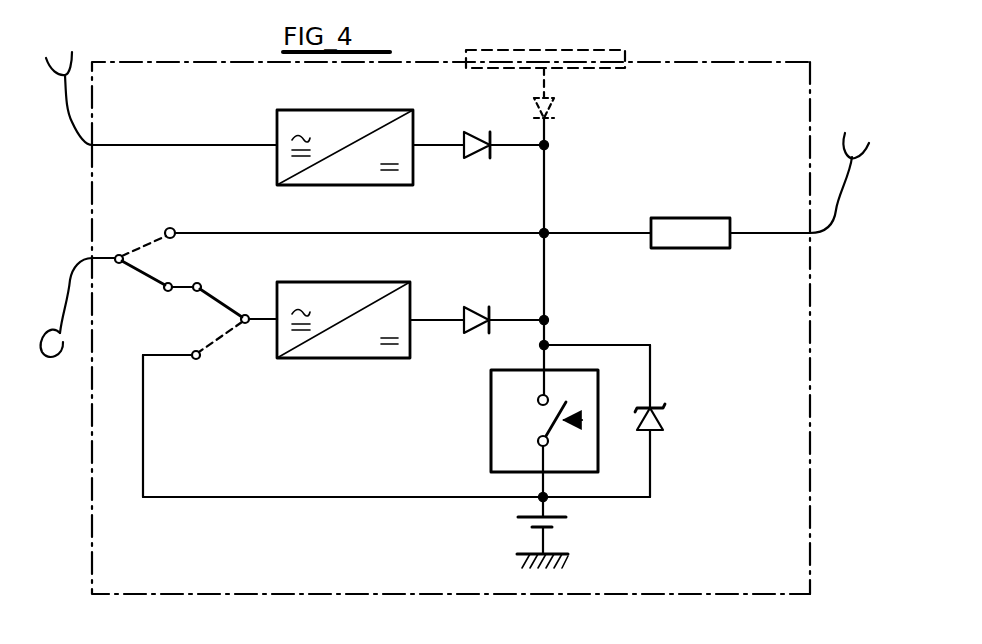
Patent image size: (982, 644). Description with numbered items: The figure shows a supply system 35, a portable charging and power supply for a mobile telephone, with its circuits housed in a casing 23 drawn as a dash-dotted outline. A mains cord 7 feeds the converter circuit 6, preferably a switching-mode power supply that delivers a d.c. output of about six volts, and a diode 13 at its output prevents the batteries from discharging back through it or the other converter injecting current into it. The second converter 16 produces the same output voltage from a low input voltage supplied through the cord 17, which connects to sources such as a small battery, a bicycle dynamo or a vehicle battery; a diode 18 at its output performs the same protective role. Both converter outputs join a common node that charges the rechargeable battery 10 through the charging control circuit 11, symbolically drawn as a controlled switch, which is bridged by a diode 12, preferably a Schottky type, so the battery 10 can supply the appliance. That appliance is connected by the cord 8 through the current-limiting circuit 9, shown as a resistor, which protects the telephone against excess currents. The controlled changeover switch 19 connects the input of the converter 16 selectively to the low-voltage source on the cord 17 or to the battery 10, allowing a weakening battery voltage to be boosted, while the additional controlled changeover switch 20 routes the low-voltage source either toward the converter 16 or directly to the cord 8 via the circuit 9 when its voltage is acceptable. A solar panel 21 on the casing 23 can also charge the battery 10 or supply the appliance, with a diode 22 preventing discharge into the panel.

The converter circuit 6 is at (355, 108).
The cord 7 is at (62, 116).
The cord 8 is at (832, 147).
The current-limiting circuit 9 is at (698, 217).
The rechargeable battery 10 is at (510, 525).
The charging control circuit 11 is at (488, 420).
The diode 12 is at (668, 415).
The diode 13 is at (482, 128).
The second converter 16 is at (350, 363).
The cord 17 is at (52, 370).
The diode 18 is at (478, 303).
The controlled changeover switch 19 is at (223, 352).
The controlled changeover switch 20 is at (145, 232).
The solar panel 21 is at (588, 43).
The diode 22 is at (560, 107).
The casing 23 is at (86, 545).
The supply system 35 is at (812, 500).